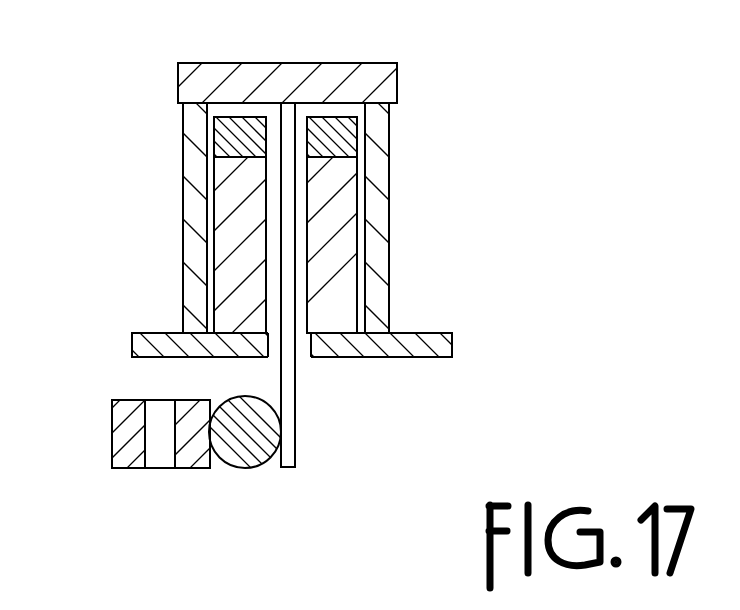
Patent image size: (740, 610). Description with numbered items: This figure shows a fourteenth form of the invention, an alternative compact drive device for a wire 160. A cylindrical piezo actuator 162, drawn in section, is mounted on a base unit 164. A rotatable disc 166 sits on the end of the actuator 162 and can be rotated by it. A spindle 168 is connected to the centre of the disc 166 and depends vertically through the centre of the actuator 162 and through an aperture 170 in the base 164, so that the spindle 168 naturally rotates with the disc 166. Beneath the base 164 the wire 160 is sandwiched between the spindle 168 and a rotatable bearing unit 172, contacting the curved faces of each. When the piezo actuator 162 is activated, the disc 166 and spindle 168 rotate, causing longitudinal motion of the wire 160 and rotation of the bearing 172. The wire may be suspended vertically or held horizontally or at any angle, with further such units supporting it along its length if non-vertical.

The wire 160 is at (230, 466).
The cylindrical piezo actuator 162 is at (389, 183).
The base unit 164 is at (425, 358).
The rotatable disc 166 is at (363, 63).
The spindle 168 is at (297, 452).
The aperture 170 is at (303, 348).
The rotatable bearing unit 172 is at (112, 422).